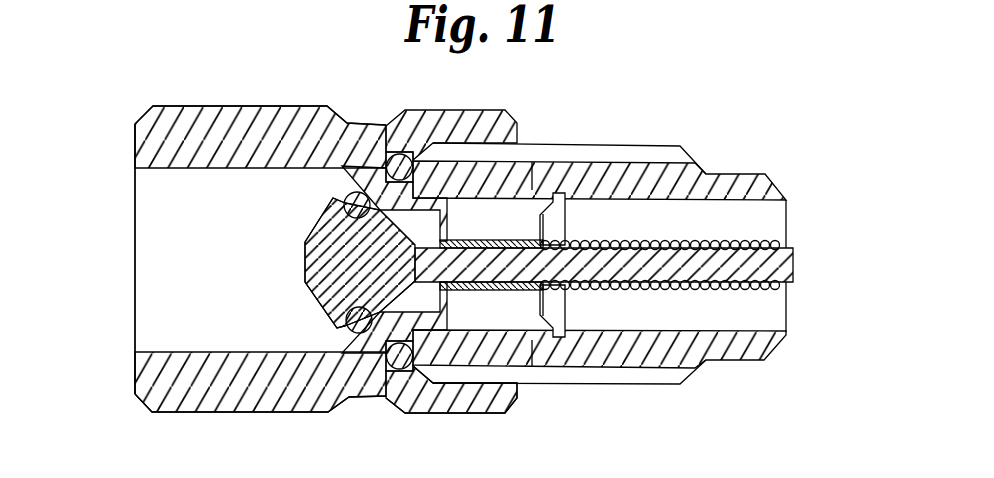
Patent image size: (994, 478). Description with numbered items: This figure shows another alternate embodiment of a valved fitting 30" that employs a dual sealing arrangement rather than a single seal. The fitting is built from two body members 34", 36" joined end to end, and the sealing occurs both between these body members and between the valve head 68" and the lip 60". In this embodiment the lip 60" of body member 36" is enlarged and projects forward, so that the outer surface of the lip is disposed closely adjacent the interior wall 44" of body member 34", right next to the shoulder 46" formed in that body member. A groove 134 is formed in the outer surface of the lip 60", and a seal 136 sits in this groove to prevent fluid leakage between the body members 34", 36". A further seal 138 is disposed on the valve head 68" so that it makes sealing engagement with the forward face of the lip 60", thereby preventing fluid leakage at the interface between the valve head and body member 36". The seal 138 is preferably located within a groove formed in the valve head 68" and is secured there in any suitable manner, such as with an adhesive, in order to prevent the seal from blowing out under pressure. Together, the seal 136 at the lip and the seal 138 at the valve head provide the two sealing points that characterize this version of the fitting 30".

The valved fitting 30 is at (785, 357).
The body member 34 is at (125, 391).
The body member 36 is at (703, 365).
The interior wall 44 is at (177, 353).
The shoulder 46 is at (381, 151).
The lip 60 is at (373, 170).
The valve head 68 is at (320, 225).
The groove 134 is at (358, 336).
The seal 136 is at (418, 382).
The seal 138 is at (340, 333).